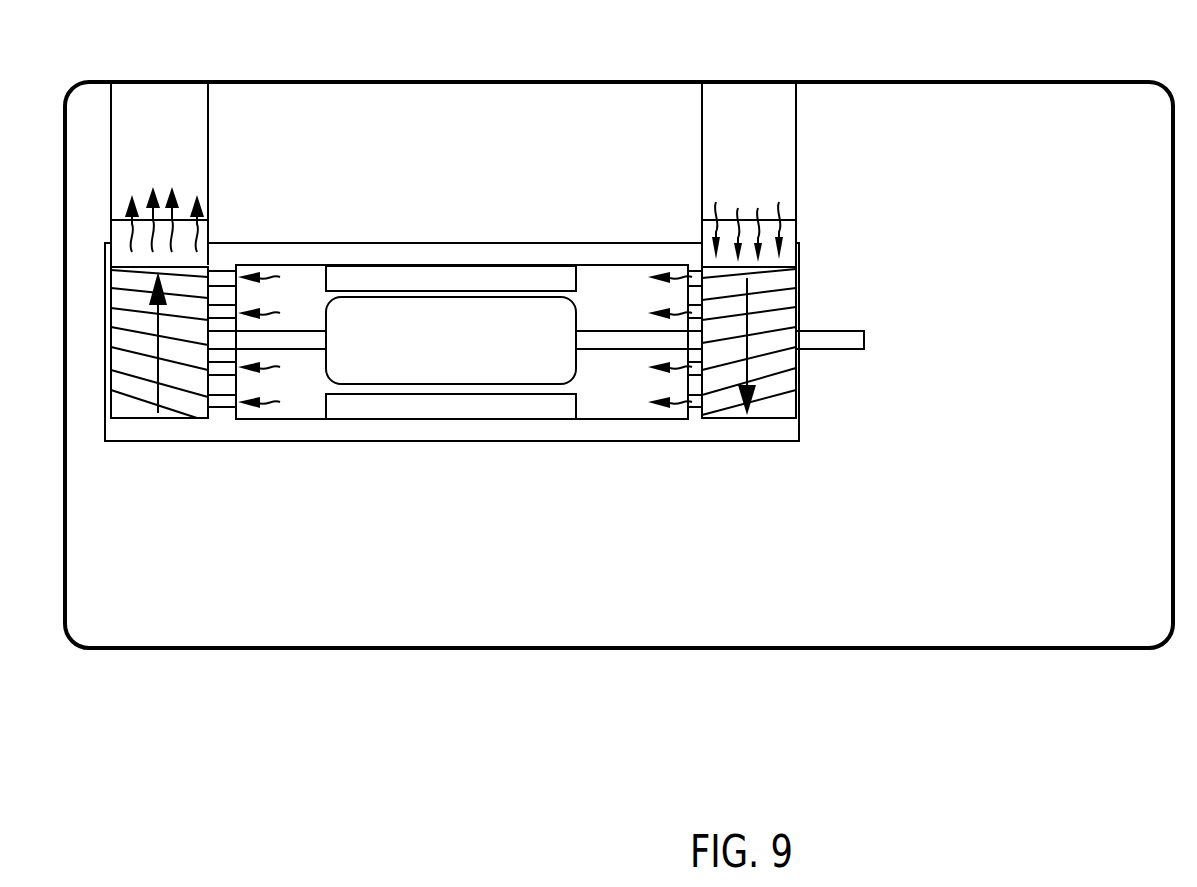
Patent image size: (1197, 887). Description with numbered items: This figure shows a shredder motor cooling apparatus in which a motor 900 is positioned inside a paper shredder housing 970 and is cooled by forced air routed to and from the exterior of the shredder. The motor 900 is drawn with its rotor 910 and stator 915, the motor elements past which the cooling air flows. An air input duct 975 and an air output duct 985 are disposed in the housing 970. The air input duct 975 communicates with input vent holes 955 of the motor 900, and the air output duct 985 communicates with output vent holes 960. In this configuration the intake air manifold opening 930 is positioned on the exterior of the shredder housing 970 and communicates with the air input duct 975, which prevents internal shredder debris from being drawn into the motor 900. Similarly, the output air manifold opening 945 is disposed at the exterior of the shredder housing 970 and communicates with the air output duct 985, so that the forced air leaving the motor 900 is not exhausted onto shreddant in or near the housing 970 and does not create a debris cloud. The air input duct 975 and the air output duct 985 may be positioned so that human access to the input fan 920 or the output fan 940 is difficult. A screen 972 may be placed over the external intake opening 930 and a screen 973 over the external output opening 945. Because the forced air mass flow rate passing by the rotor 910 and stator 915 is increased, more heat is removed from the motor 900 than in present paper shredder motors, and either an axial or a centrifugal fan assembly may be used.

The motor 900 is at (527, 224).
The rotor 910 is at (540, 354).
The stator 915 is at (541, 417).
The input fan 920 is at (758, 419).
The intake air manifold opening 930 is at (703, 82).
The output fan 940 is at (178, 419).
The output air manifold opening 945 is at (112, 82).
The input vent holes 955 is at (690, 407).
The output vent holes 960 is at (220, 407).
The paper shredder housing 970 is at (462, 648).
The screen 972 is at (777, 82).
The screen 973 is at (190, 82).
The air input duct 975 is at (728, 168).
The air output duct 985 is at (137, 168).